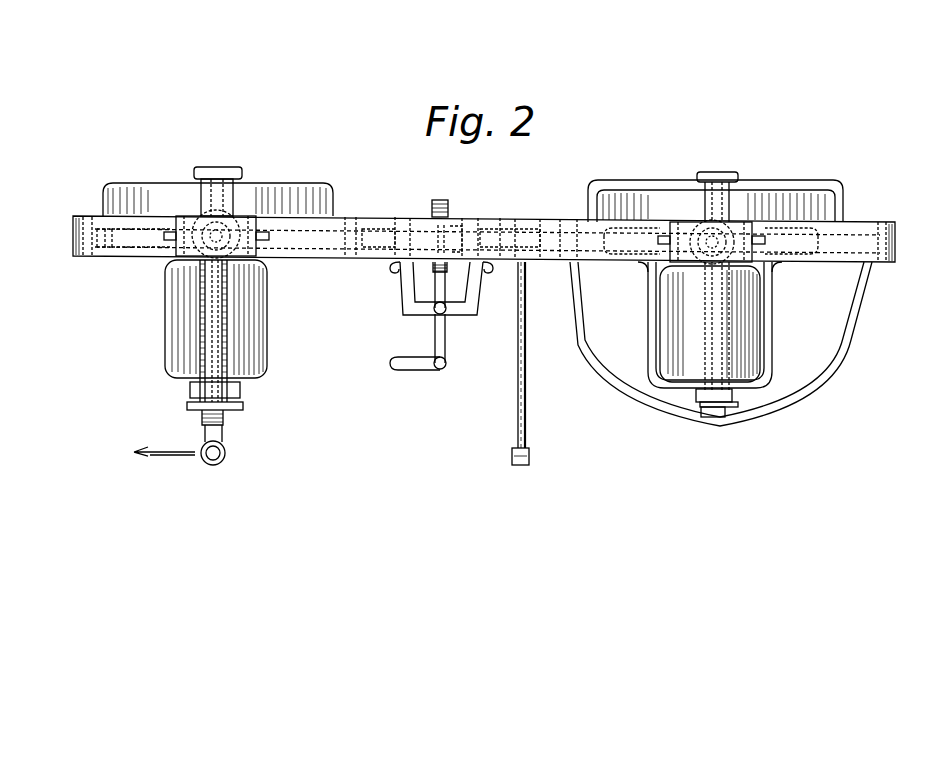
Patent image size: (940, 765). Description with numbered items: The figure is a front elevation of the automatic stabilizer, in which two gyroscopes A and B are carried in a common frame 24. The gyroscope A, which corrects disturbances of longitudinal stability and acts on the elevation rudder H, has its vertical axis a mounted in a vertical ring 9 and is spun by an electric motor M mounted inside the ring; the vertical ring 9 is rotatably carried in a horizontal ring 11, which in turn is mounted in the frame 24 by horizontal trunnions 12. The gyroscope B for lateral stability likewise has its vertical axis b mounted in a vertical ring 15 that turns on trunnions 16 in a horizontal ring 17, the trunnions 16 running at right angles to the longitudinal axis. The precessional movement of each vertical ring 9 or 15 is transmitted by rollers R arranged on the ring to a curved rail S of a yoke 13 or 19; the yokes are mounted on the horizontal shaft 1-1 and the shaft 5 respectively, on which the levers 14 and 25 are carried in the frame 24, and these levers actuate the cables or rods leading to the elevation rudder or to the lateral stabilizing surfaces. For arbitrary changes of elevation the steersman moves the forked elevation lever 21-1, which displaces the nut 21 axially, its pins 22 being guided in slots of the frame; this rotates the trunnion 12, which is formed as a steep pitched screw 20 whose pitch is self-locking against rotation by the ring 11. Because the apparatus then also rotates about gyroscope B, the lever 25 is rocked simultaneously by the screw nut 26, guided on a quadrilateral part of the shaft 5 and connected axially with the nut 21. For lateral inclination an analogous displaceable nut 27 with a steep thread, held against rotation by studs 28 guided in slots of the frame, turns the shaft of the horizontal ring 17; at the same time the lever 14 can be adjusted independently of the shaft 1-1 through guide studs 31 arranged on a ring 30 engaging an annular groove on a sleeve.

The shaft 5 is at (548, 224).
The trunnion 12 is at (80, 246).
The horizontal ring 11 is at (103, 247).
The frame 24 is at (70, 225).
The steep pitched screw 20 is at (378, 232).
The screw nut 26 is at (483, 226).
The gyroscope A is at (314, 189).
The ring 30 is at (200, 212).
The vertical axis a is at (222, 174).
The vertical ring 9 is at (248, 195).
The guide studs 31 is at (266, 242).
The horizontal shaft 1-1 is at (200, 266).
The electric motor M is at (262, 345).
The rollers R is at (190, 408).
The rail S is at (222, 415).
The yoke 13 is at (206, 414).
The lever 14 is at (226, 448).
The elevation rudder H is at (149, 455).
The nut 21 is at (392, 262).
The pins 22 is at (436, 260).
The forked elevation lever 21-1 is at (444, 343).
The lever 25 is at (515, 308).
The gyroscope B is at (805, 190).
The trunnions 16 is at (584, 230).
The vertical axis b is at (718, 177).
The displaceable nut 27 is at (730, 215).
The studs 28 is at (770, 248).
The vertical ring 15 is at (838, 196).
The horizontal ring 17 is at (578, 262).
The yoke 19 is at (582, 341).